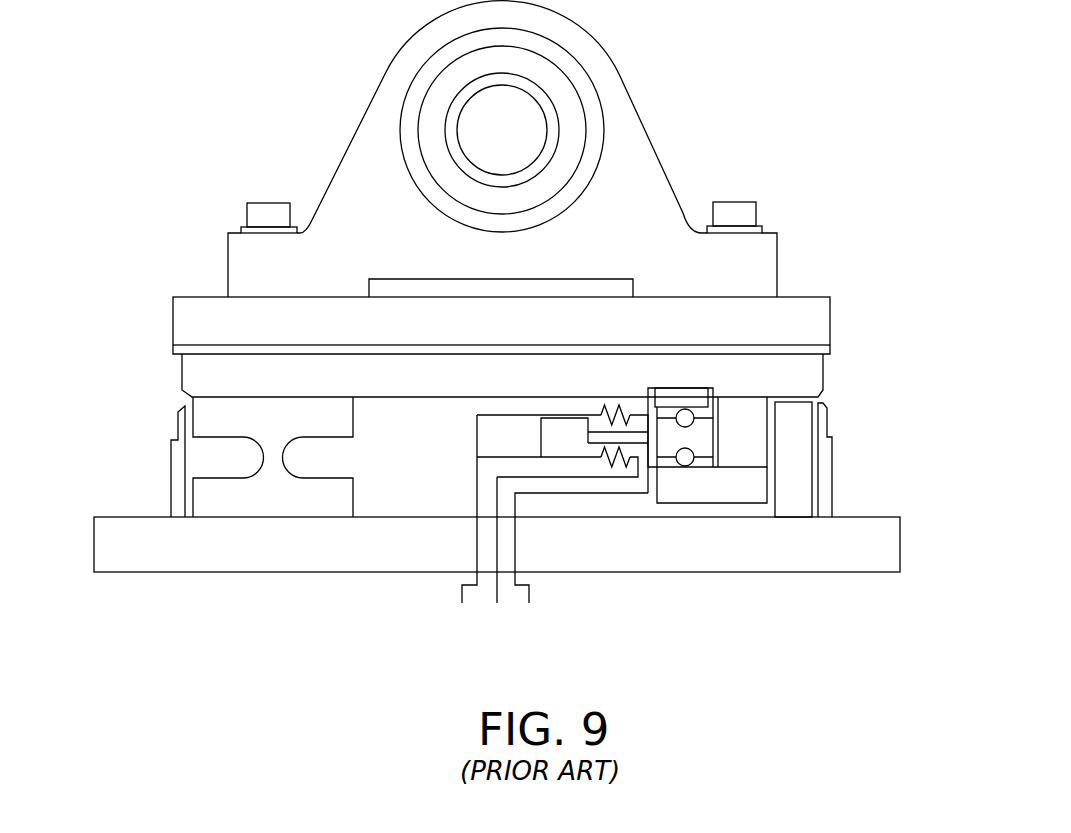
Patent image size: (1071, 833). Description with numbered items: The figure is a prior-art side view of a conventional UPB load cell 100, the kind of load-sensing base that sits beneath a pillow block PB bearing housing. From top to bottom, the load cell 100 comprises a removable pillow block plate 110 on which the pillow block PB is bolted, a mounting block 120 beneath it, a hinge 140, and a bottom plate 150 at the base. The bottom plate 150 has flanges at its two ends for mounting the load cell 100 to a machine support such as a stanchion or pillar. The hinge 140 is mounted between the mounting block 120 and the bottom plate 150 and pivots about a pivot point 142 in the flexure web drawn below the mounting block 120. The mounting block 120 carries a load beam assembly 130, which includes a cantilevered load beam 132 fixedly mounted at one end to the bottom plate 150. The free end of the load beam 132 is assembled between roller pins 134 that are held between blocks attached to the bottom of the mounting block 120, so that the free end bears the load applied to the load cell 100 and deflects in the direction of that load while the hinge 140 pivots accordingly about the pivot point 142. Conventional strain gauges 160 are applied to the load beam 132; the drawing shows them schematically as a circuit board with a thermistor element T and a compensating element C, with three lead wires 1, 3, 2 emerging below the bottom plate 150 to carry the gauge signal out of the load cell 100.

The UPB load cell 100 is at (274, 95).
The pillow block PB is at (605, 62).
The removable pillow block plate 110 is at (277, 320).
The mounting block 120 is at (227, 378).
The load beam assembly 130 is at (693, 435).
The load beam 132 is at (633, 435).
The roller pins 134 is at (693, 415).
The hinge 140 is at (208, 422).
The pivot point 142 is at (270, 460).
The bottom plate 150 is at (191, 543).
The strain gauges 160 is at (630, 445).
The thermistor T is at (615, 394).
The capacitor C is at (615, 485).
The lead wire 1 is at (466, 526).
The lead wire 2 is at (581, 565).
The lead wire 3 is at (495, 557).